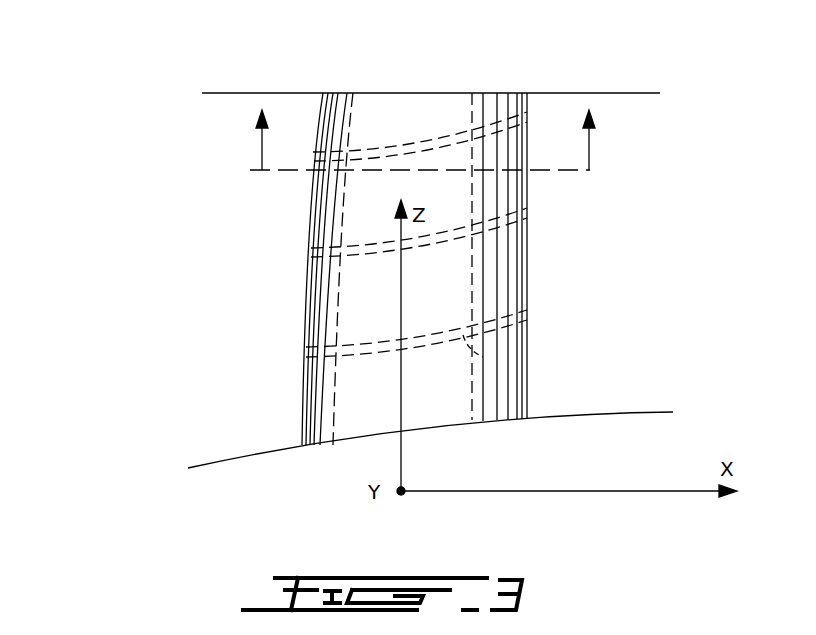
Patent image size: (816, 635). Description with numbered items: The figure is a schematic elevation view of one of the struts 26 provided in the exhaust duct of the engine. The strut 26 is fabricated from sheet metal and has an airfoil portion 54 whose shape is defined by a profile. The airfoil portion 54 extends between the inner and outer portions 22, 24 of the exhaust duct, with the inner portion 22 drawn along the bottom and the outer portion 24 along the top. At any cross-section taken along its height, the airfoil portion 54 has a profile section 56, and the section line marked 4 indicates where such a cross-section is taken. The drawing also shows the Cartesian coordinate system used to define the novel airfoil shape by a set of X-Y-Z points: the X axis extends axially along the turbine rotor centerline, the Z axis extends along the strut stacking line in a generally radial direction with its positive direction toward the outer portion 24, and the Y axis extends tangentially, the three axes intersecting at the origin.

The inner portion 22 is at (570, 419).
The outer portion 24 is at (606, 93).
The strut 26 is at (197, 241).
The airfoil portion 54 is at (528, 270).
The profile section 56 is at (483, 357).
The section line 4- 4 is at (423, 156).